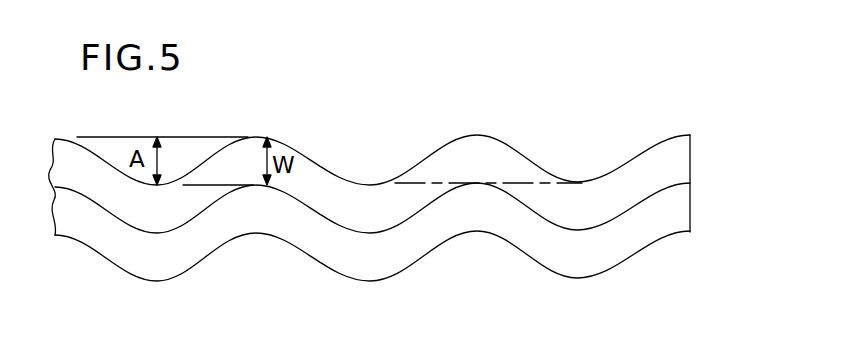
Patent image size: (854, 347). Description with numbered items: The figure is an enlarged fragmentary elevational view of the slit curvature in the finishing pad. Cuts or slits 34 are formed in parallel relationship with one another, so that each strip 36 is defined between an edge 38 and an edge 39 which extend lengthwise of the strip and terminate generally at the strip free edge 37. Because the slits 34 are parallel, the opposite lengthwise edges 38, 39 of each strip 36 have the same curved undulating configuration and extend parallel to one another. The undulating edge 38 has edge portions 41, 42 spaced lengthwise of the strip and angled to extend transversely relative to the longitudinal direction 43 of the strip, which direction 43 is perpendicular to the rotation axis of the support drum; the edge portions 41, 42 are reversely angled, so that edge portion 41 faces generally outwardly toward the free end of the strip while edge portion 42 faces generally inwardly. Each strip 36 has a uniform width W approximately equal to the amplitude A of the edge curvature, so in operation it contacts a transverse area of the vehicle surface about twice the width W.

The cuts or slits 34 is at (407, 223).
The strip 36 is at (565, 202).
The strip free edge 37 is at (684, 212).
The edge 38 is at (312, 142).
The edge 39 is at (310, 205).
The edge portion 41 is at (513, 147).
The edge portion 42 is at (643, 152).
The longitudinal direction 43 is at (413, 182).